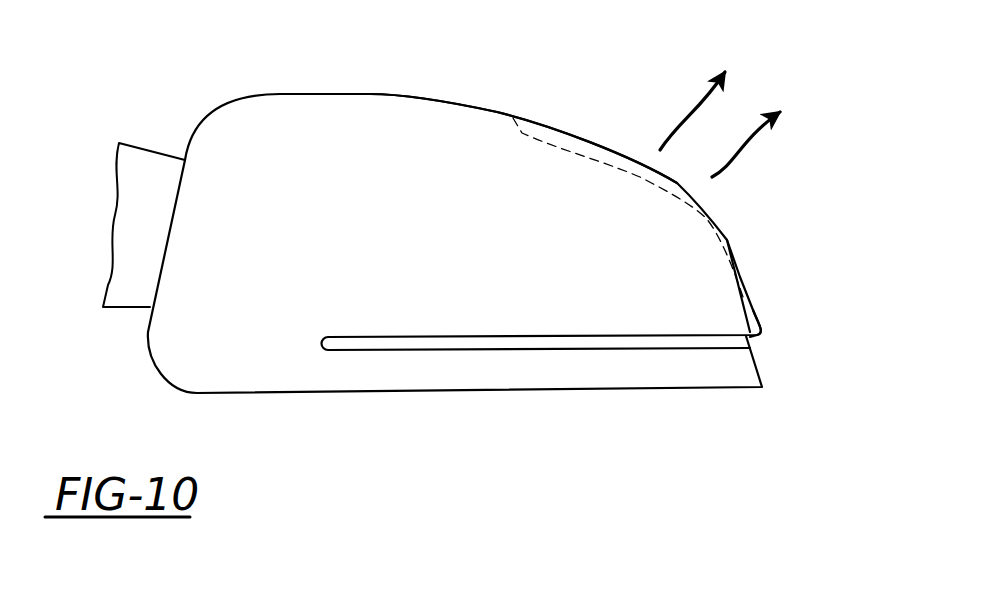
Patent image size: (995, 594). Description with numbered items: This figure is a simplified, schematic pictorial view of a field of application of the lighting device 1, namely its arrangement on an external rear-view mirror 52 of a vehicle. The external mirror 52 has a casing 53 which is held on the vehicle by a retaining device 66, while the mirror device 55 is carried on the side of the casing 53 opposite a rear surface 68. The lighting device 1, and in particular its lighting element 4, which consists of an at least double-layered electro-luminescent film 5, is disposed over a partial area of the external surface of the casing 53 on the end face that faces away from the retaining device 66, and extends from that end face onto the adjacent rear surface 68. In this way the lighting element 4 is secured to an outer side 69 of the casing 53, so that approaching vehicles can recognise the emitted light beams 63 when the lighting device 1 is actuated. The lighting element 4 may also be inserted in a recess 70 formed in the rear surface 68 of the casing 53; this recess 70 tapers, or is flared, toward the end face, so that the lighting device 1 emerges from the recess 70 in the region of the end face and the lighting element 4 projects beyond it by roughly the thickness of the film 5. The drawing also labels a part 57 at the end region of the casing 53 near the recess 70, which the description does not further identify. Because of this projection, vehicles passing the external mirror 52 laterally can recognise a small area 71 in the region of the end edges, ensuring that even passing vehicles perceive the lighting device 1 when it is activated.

The lighting device 1 is at (630, 147).
The lighting element 4 is at (765, 315).
The electro-luminescent film 5 is at (768, 335).
The external mirror 52 is at (622, 75).
The casing 53 is at (282, 350).
The mirror device 55 is at (487, 399).
The lip 57 is at (737, 262).
The light beams 63 is at (747, 140).
The retaining device 66 is at (147, 165).
The rear surface 68 is at (497, 112).
The outer side 69 is at (387, 107).
The recess 70 is at (573, 123).
The small area 71 is at (775, 272).